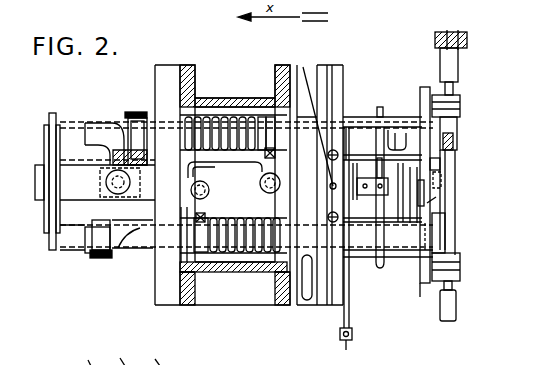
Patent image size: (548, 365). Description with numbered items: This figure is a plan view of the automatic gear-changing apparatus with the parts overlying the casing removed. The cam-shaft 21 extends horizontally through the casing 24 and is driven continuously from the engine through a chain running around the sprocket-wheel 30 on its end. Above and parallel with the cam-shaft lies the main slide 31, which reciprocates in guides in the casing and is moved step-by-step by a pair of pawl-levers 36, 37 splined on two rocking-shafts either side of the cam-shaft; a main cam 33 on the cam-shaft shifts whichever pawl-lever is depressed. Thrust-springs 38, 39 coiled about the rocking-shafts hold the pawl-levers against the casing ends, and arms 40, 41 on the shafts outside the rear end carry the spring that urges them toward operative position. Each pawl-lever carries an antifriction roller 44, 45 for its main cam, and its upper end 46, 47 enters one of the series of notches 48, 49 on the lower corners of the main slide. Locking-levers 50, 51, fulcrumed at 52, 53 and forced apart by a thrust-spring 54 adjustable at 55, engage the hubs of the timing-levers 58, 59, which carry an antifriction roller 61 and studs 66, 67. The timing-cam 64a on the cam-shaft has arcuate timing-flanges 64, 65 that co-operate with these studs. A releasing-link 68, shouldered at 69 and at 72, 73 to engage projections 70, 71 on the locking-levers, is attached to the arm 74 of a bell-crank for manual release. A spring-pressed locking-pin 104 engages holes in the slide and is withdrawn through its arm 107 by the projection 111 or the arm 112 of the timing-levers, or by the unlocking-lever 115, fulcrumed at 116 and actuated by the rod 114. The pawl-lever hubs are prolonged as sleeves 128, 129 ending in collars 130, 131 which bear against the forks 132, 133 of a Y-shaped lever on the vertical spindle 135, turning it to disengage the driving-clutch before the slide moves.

The cam-shaft 21 is at (72, 120).
The casing 24 is at (190, 65).
The sprocket-wheel 30 is at (53, 117).
The main slide 31 is at (117, 354).
The main cam 33 is at (251, 166).
The pawl-lever 36 is at (212, 273).
The pawl-lever 37 is at (271, 120).
The thrust-spring 38 is at (238, 273).
The thrust-spring 39 is at (206, 135).
The arm 40 is at (381, 268).
The arm 41 is at (381, 106).
The antifriction roller 44 is at (209, 201).
The antifriction roller 45 is at (263, 193).
The upper end of pawl-lever 46 is at (198, 273).
The upper end of pawl-lever 47 is at (266, 127).
The series of notches 48 is at (88, 355).
The series of notches 49 is at (150, 356).
The locking-lever 50 is at (426, 277).
The locking-lever 51 is at (427, 87).
The fulcrum 52 is at (220, 168).
The fulcrum 53 is at (457, 130).
The thrust-spring 54 is at (88, 246).
The adjustment 55 is at (90, 120).
The timing-lever 58 is at (397, 242).
The timing-lever 59 is at (440, 162).
The antifriction roller 61 is at (441, 181).
The timing-flange 64 is at (390, 130).
The timing-cam 64a is at (430, 203).
The timing-flange 65 is at (396, 130).
The stud 66 is at (424, 193).
The stud 67 is at (457, 145).
The releasing-link 68 is at (456, 310).
The shoulder 69 is at (456, 212).
The projection 70 is at (460, 262).
The projection 71 is at (460, 102).
The shoulder 72 is at (452, 285).
The shoulder 73 is at (458, 83).
The arm of bell-crank lever 74 is at (468, 40).
The locking-pin 104 is at (303, 67).
The arm 107 is at (333, 130).
The projection 111 is at (360, 253).
The arm 112 is at (360, 117).
The rod 114 is at (353, 341).
The unlocking-lever 115 is at (332, 318).
The fulcrum 116 is at (350, 300).
The sleeve 128 is at (147, 252).
The sleeve 129 is at (148, 112).
The collar 130 is at (100, 258).
The collar 131 is at (137, 113).
The fork 132 is at (123, 250).
The fork 133 is at (113, 120).
The vertical spindle 135 is at (78, 226).